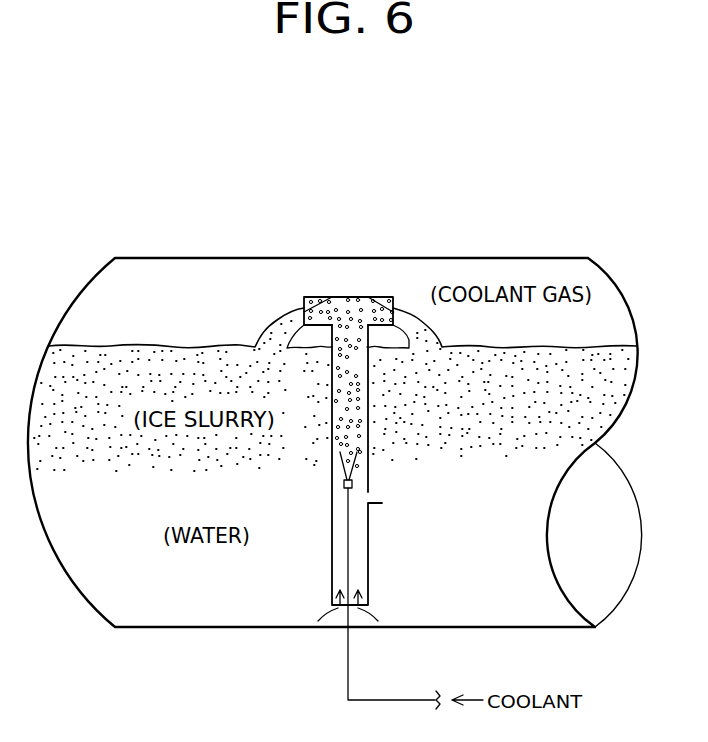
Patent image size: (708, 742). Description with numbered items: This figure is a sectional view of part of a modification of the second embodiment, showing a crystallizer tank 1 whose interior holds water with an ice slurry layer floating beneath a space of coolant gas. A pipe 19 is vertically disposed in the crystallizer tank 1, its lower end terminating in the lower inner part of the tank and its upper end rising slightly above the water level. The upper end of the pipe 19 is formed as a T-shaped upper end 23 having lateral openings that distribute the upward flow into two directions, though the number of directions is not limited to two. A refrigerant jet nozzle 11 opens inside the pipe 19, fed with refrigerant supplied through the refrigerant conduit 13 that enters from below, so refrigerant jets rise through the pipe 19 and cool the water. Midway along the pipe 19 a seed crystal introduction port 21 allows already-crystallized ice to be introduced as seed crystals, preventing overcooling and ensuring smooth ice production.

The crystallizer tank 1 is at (287, 258).
The T-shaped upper end 23 is at (350, 298).
The seed crystal introduction port 21 is at (358, 495).
The pipe 19 is at (330, 578).
The refrigerant jet nozzle 11 is at (350, 557).
The refrigerant conduit 13 is at (349, 672).